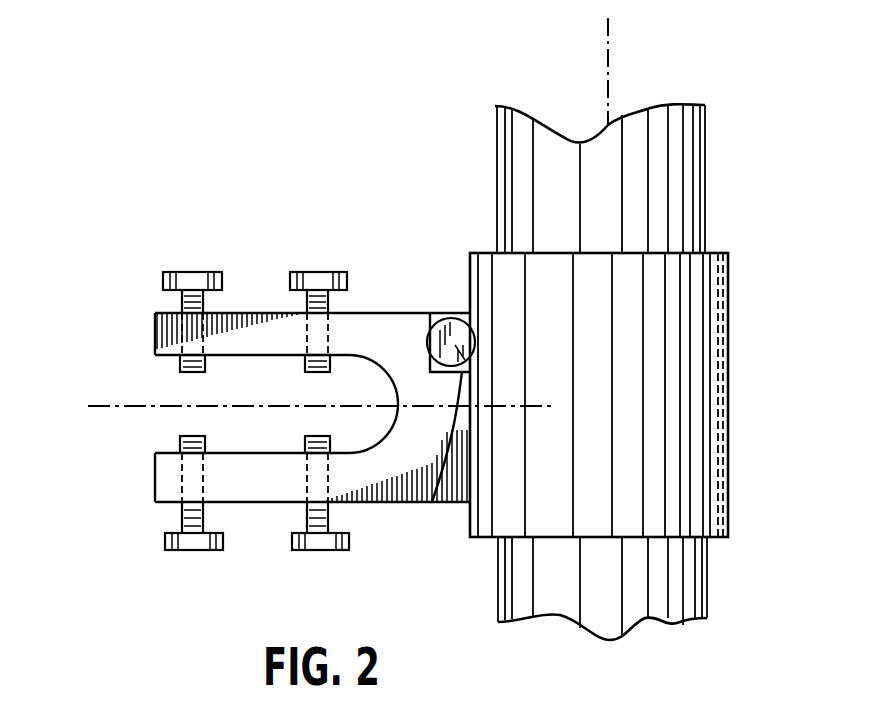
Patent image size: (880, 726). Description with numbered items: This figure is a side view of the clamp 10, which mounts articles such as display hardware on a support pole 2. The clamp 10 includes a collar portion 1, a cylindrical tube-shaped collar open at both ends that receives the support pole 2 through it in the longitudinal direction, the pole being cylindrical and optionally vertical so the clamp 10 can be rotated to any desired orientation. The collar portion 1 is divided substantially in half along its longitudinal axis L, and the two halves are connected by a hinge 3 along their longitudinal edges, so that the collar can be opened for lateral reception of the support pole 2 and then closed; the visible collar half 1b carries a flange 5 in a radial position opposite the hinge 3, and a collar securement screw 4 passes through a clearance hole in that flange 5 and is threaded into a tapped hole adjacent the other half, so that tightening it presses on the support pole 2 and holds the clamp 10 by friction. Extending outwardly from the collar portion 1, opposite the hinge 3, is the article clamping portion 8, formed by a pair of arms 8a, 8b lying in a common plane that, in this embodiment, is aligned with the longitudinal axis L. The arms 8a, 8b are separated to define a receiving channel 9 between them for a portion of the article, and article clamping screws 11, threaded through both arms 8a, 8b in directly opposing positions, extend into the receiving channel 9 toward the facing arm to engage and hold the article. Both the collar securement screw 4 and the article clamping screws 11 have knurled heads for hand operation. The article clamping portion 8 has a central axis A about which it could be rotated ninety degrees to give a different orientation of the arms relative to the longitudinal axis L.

The collar portion 1 is at (635, 540).
The collar half 1b is at (600, 438).
The support pole 2 is at (633, 155).
The hinge 3 is at (730, 332).
The collar securement screw 4 is at (432, 503).
The flange 5 is at (452, 315).
The article clamping portion 8 is at (400, 505).
The arm 8a is at (155, 335).
The arm 8b is at (172, 476).
The receiving channel 9 is at (178, 380).
The clamp 10 is at (355, 215).
The article clamping screws 11 is at (203, 270).
The central axis A is at (130, 407).
The longitudinal axis L is at (608, 122).